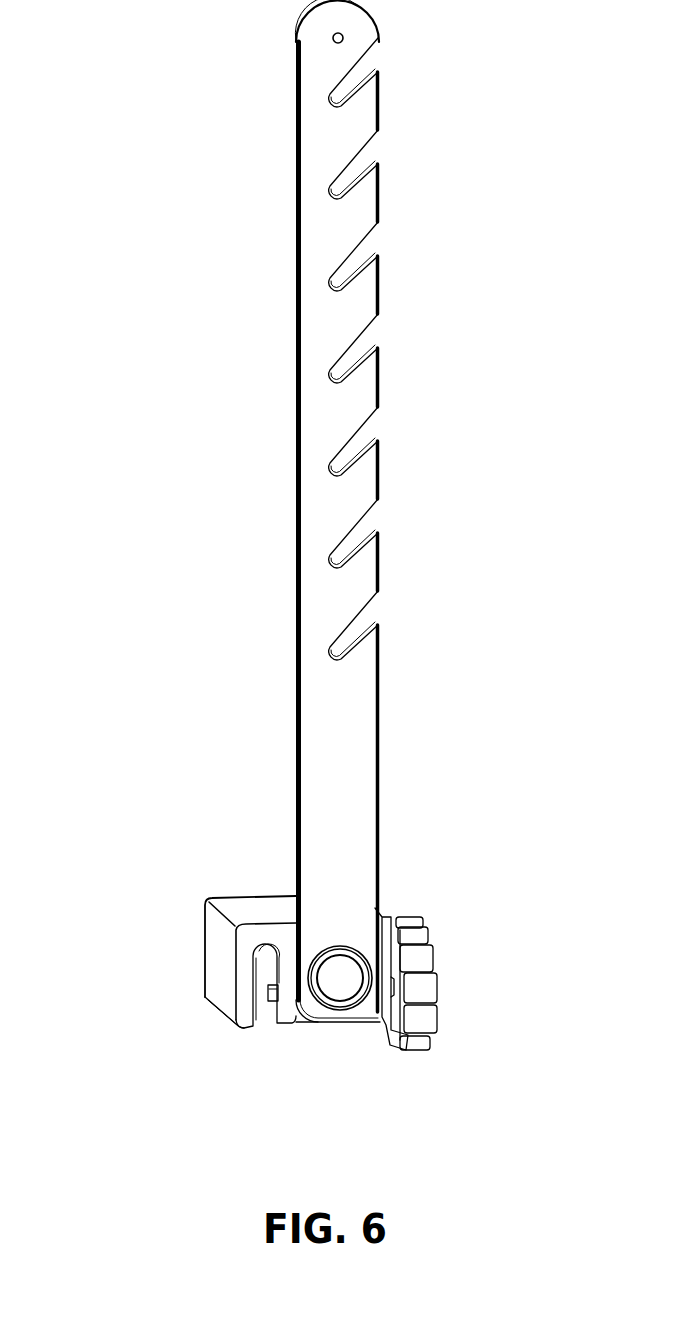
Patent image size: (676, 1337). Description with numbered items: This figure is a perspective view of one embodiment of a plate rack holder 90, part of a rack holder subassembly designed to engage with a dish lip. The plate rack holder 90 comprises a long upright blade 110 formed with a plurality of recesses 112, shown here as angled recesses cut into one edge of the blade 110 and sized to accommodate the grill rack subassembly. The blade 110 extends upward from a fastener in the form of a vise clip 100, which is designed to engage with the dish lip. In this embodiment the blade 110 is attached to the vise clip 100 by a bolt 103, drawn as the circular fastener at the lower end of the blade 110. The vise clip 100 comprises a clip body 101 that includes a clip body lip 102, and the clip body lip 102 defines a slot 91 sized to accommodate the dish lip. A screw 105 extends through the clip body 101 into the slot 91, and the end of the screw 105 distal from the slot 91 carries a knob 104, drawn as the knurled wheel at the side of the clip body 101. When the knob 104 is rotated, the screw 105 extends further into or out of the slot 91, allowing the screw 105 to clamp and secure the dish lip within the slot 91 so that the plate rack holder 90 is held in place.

The plate rack holder 90 is at (223, 197).
The slot 91 is at (283, 1045).
The vise clip 100 is at (199, 929).
The clip body 101 is at (263, 895).
The clip body lip 102 is at (213, 1010).
The bolt 103 is at (343, 942).
The knob 104 is at (431, 944).
The screw 105 is at (272, 1005).
The blade 110 is at (289, 688).
The recesses 112 is at (357, 633).